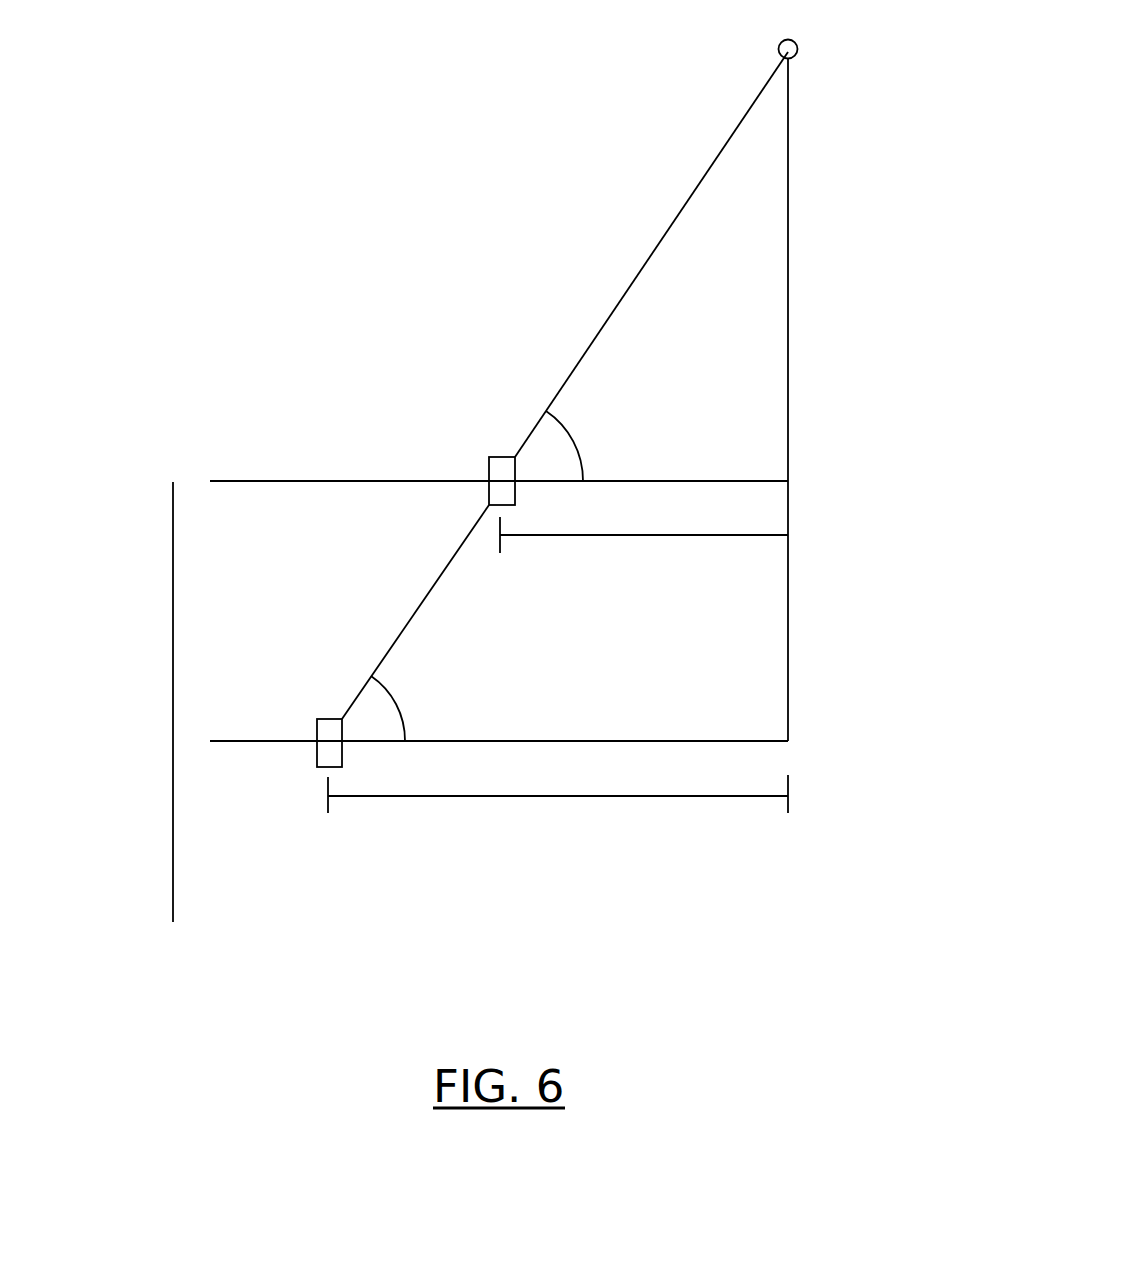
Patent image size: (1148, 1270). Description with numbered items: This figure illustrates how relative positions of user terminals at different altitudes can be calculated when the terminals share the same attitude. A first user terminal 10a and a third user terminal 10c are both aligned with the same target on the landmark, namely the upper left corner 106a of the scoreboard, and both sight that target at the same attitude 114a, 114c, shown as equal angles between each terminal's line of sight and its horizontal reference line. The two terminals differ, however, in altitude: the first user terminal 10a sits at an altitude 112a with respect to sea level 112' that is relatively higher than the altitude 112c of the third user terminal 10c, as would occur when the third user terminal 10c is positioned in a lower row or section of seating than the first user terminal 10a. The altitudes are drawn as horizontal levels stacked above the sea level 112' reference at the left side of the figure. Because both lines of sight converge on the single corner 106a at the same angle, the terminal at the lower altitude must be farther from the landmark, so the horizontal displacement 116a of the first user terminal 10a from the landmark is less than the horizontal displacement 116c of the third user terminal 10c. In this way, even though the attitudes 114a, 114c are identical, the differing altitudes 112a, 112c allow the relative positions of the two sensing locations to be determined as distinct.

The upper left corner 106a is at (795, 42).
The first user terminal 10a is at (489, 457).
The third user terminal 10c is at (322, 719).
The altitude 112a is at (190, 482).
The altitude 112c is at (190, 742).
The sea level 112' is at (144, 708).
The attitude 114a is at (572, 427).
The attitude 114c is at (402, 703).
The horizontal displacement 116a is at (563, 537).
The horizontal displacement 116c is at (563, 797).